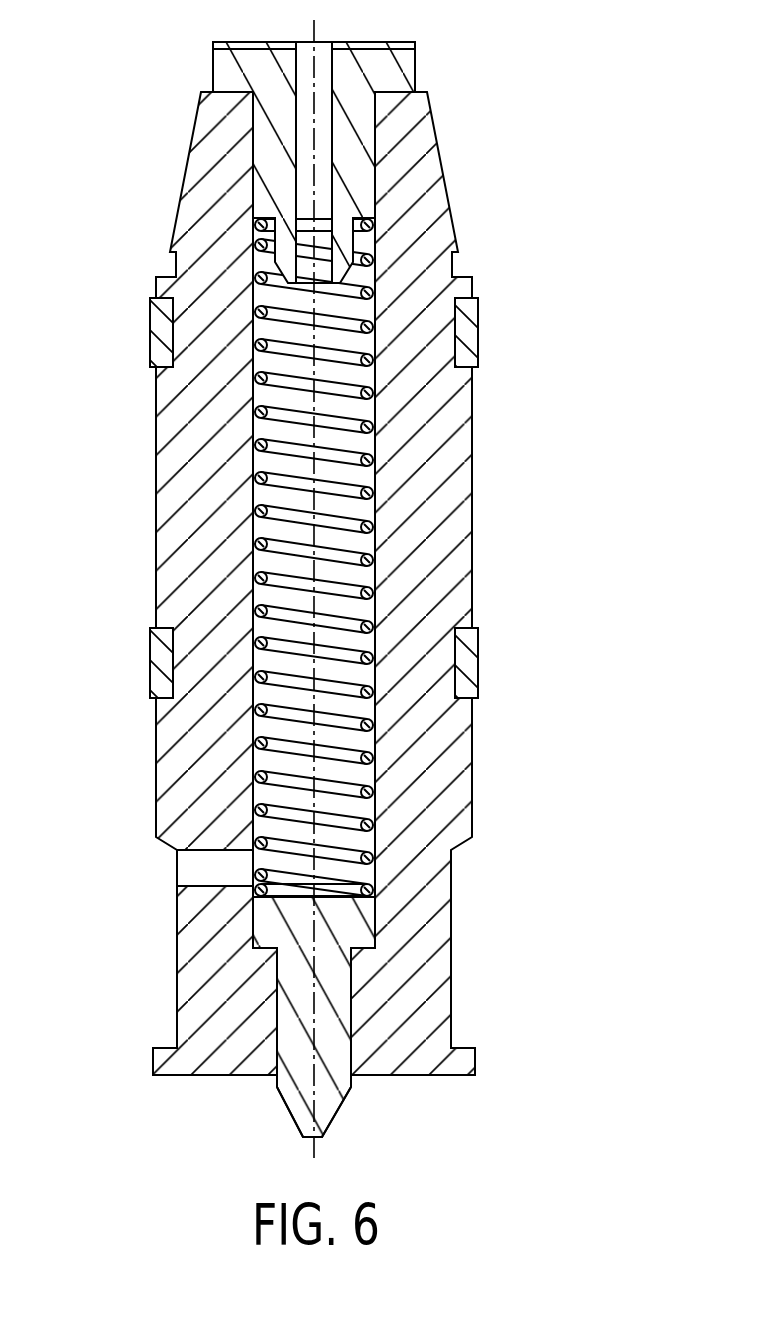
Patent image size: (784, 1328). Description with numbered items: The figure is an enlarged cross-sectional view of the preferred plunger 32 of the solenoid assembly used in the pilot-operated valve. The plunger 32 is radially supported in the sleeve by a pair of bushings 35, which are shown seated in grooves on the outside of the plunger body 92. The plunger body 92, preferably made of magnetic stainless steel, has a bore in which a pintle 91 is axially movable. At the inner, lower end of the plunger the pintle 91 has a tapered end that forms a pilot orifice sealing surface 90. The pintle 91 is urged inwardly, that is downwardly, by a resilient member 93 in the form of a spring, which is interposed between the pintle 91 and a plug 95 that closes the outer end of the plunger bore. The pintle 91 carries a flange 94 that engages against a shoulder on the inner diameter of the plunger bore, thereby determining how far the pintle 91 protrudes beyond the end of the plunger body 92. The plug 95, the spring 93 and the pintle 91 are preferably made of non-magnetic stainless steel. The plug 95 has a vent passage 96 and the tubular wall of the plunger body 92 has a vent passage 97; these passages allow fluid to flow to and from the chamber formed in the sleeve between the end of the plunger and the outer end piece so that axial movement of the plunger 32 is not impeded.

The plunger 32 is at (311, 583).
The bushings 35 is at (480, 327).
The pilot orifice sealing surface 90 is at (292, 1113).
The pintle 91 is at (353, 1010).
The plunger body 92 is at (453, 463).
The resilient member 93 is at (253, 477).
The flange 94 is at (245, 923).
The plug 95 is at (420, 77).
The vent passage 96 is at (323, 167).
The vent passage 97 is at (188, 863).